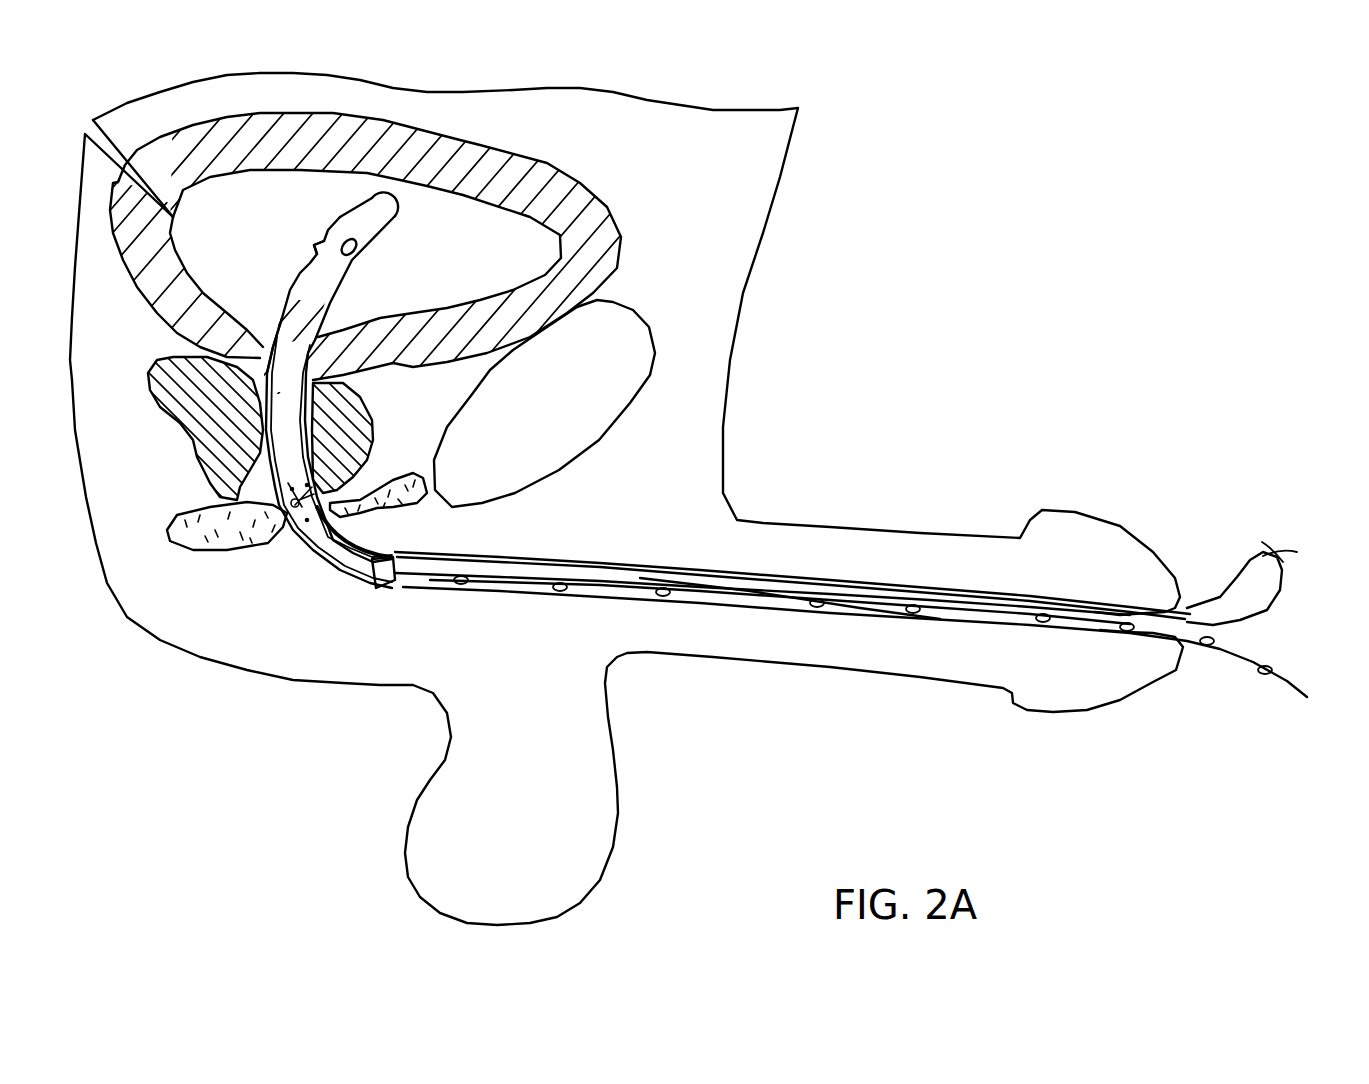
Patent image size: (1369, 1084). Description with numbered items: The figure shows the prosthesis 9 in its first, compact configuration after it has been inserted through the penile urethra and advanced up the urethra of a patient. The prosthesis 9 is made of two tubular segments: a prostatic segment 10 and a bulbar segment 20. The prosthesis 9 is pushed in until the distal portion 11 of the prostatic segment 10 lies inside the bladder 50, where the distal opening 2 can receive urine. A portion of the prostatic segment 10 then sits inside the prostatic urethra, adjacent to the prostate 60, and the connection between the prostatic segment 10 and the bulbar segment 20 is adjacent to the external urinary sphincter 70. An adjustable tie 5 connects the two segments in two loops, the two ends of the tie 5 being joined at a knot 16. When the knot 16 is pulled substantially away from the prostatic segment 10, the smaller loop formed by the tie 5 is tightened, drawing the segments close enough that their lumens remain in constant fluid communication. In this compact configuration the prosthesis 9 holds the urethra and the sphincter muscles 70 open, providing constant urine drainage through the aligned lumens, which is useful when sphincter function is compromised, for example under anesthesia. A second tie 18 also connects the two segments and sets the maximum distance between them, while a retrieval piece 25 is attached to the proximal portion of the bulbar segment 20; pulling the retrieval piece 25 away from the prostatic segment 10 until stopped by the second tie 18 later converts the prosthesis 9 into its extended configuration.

The distal opening 2 is at (323, 243).
The adjustable tie 5 is at (598, 567).
The prosthesis 9 is at (262, 297).
The prostatic segment 10 is at (321, 305).
The distal portion 11 is at (390, 214).
The knot 16 is at (1290, 561).
The second tie 18 is at (310, 510).
The bulbar segment 20 is at (350, 560).
The retrieval piece 25 is at (518, 586).
The bladder 50 is at (545, 165).
The prostate 60 is at (170, 372).
The external urinary sphincter 70 is at (185, 524).